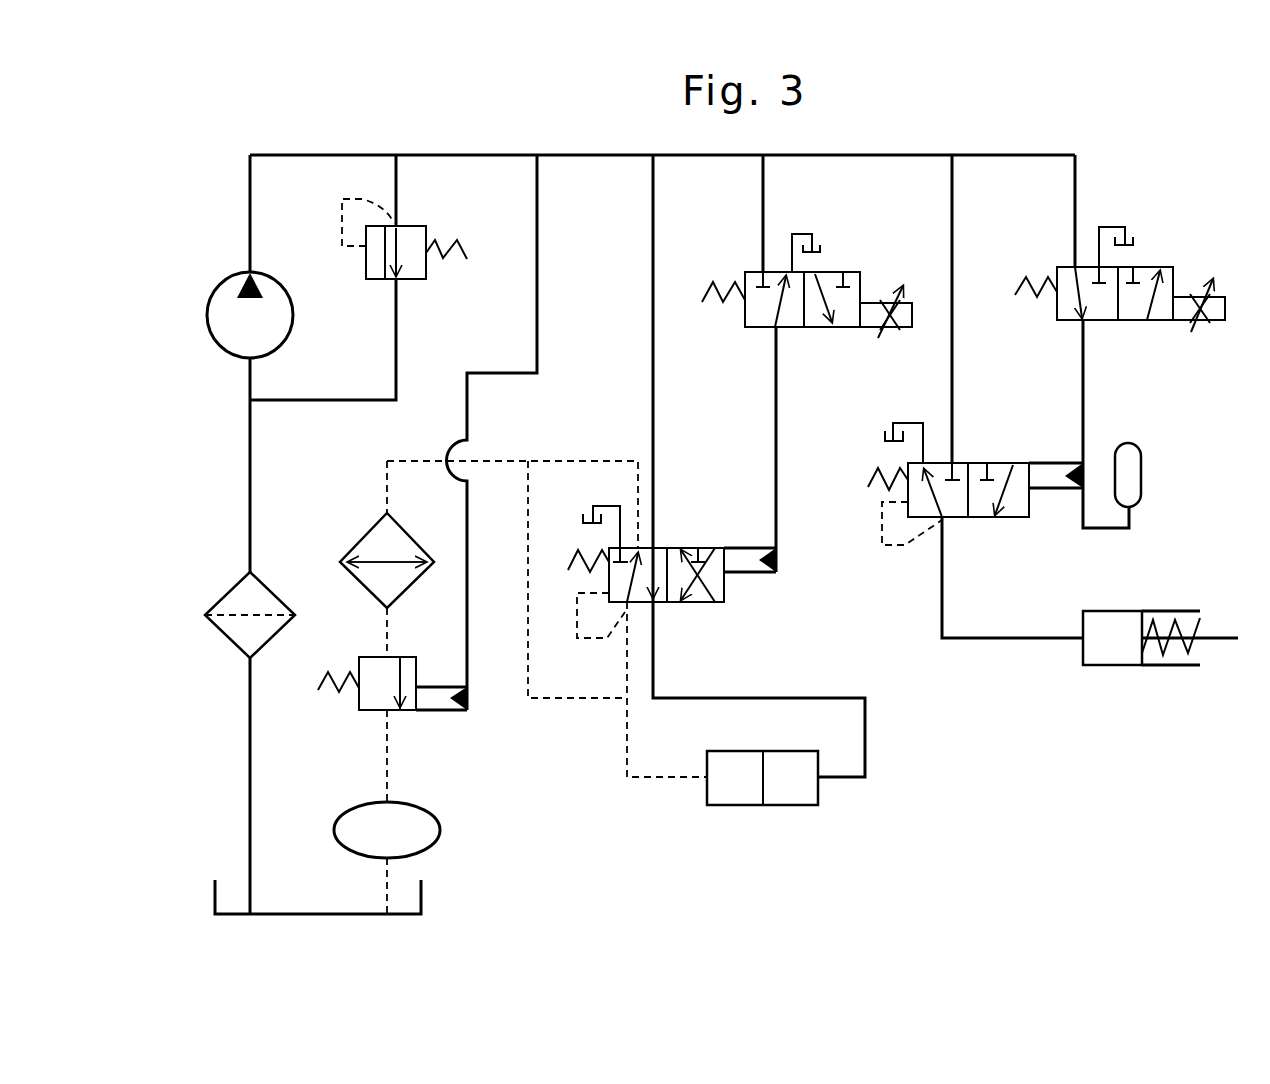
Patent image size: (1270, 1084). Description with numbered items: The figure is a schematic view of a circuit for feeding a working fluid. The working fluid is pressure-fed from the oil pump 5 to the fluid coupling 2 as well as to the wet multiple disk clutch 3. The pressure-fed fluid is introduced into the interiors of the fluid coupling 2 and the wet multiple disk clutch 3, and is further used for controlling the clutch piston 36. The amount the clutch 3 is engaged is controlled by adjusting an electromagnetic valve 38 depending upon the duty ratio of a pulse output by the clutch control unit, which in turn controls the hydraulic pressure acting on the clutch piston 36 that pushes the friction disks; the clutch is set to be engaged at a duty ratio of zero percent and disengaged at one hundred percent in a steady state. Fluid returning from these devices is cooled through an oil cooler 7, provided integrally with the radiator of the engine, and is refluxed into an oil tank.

The oil pump 5 is at (222, 285).
The oil cooler 7 is at (440, 828).
The fluid coupling 2 is at (769, 847).
The wet multiple disk clutch 3 is at (1018, 680).
The electromagnetic valve 38 is at (1145, 265).
The clutch piston 36 is at (1138, 622).